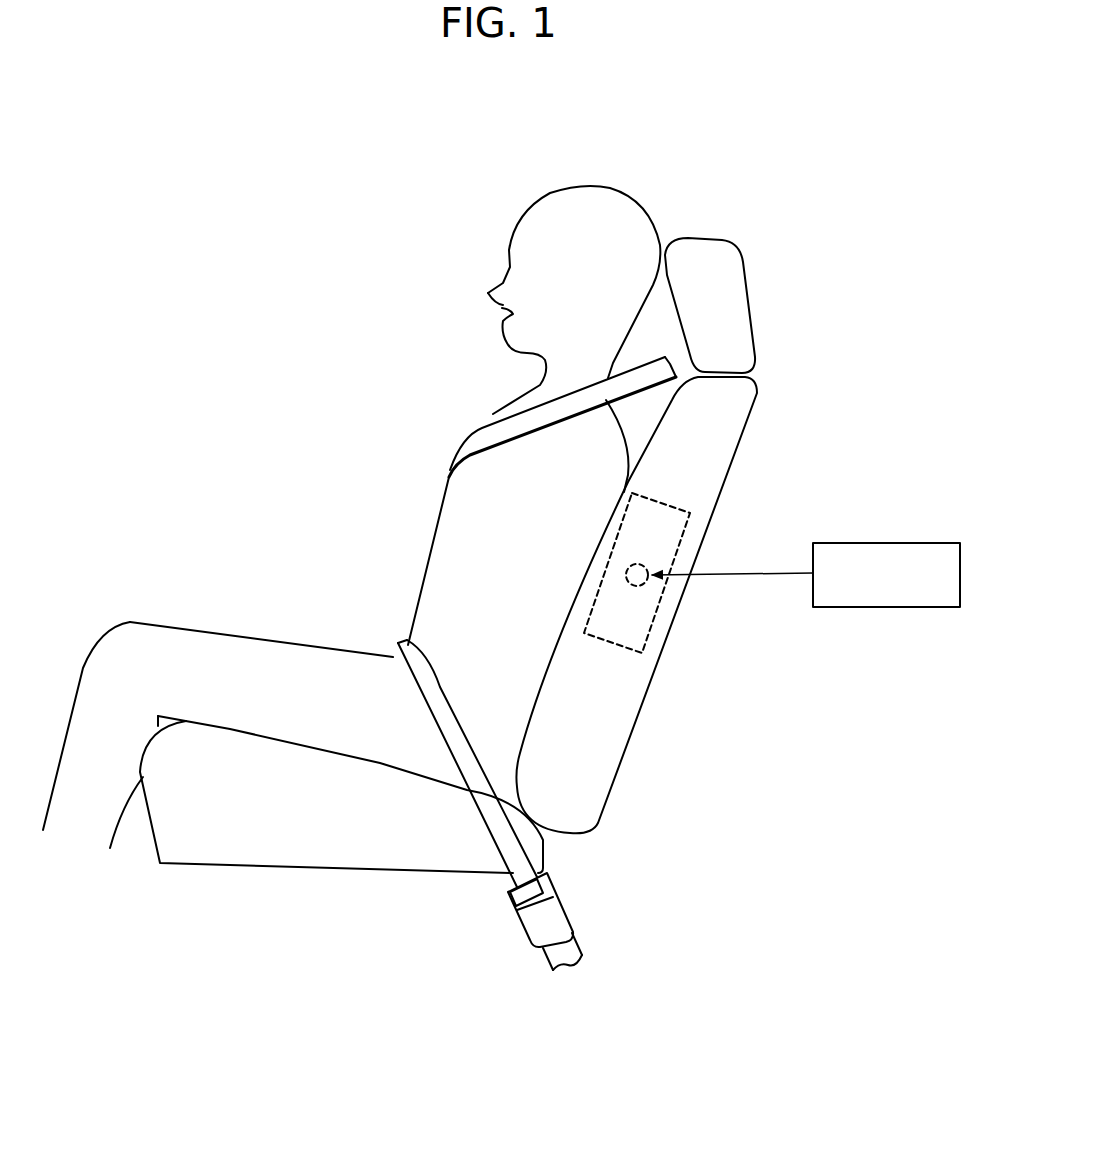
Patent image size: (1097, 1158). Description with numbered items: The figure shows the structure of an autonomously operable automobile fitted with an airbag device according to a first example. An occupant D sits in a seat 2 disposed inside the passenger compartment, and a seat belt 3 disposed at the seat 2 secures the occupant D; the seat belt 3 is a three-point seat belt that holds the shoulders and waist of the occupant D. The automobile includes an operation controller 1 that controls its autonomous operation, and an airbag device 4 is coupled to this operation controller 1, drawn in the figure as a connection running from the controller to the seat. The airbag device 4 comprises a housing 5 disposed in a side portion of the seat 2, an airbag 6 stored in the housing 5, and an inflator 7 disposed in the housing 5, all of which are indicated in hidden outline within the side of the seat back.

The occupant D is at (617, 188).
The operation controller 1 is at (945, 543).
The seat 2 is at (743, 277).
The seat belt 3 is at (503, 433).
The airbag device 4 is at (750, 482).
The housing 5 is at (652, 630).
The airbag 6 is at (662, 522).
The inflator 7 is at (638, 587).